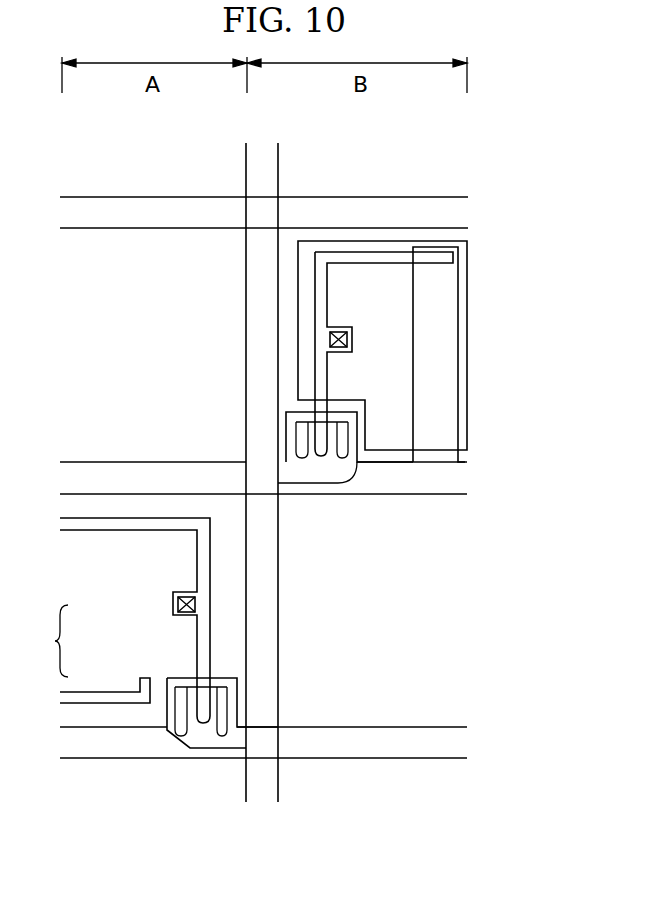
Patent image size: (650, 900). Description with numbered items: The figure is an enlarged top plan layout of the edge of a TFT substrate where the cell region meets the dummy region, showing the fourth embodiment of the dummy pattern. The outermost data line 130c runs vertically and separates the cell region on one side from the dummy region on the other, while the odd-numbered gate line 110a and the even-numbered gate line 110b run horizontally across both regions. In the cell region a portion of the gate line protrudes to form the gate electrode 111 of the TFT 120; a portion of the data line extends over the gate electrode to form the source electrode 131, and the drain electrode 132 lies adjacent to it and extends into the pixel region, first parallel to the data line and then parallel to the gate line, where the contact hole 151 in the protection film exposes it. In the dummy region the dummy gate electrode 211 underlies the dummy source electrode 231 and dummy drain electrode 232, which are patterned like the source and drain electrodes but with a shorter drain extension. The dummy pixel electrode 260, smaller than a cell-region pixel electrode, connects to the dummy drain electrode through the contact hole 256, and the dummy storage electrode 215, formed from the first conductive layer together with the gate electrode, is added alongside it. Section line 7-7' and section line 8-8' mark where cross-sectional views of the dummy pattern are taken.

The data line 130c is at (264, 165).
The dummy drain electrode 232 is at (322, 283).
The contact hole 256 is at (330, 337).
The dummy pixel electrode 260 is at (408, 291).
The dummy storage electrode 215 is at (453, 402).
The dummy source electrode 231 is at (289, 425).
The dummy gate electrode 211 is at (352, 453).
The even-numbered gate line 110b is at (450, 478).
The odd-numbered gate line 110a is at (448, 745).
The contact hole 151 is at (177, 594).
The drain electrode 132 is at (202, 625).
The source electrode 131 is at (183, 690).
The gate electrode 111 is at (170, 695).
The TFT 120 is at (40, 641).
The section line VII 7 is at (312, 416).
The section line VII' 7' is at (387, 339).
The section line VIII 8 is at (364, 445).
The section line VIII' 8' is at (490, 444).